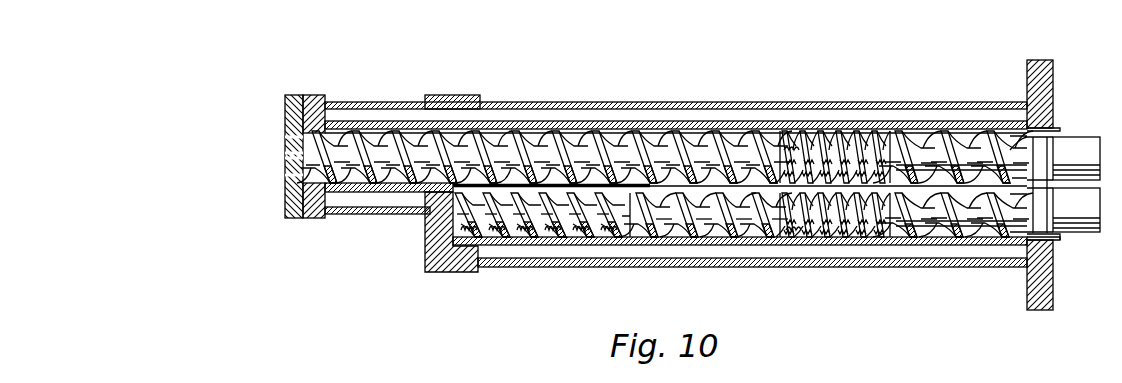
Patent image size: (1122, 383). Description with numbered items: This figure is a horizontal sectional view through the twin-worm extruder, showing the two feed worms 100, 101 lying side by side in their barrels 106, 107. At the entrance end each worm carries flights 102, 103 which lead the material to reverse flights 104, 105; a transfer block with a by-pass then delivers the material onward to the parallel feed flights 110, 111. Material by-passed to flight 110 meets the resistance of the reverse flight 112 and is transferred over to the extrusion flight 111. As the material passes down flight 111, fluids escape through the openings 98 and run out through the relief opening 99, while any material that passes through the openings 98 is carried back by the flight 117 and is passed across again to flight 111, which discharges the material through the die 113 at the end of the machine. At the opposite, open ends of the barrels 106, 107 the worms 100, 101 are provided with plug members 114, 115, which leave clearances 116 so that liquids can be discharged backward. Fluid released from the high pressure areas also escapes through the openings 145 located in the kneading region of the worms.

The openings 98 is at (608, 188).
The relief opening 99 is at (427, 228).
The feed worm 100 is at (1005, 225).
The feed worm 101 is at (973, 150).
The flight 102 is at (918, 220).
The flight 103 is at (927, 150).
The reverse flight 104 is at (855, 228).
The reverse flight 105 is at (853, 150).
The barrel 106 is at (915, 215).
The barrel 107 is at (888, 150).
The feed flight 110 is at (698, 215).
The extrusion flight 111 is at (690, 152).
The reverse flight 112 is at (655, 215).
The die 113 is at (283, 150).
The plug member 114 is at (1076, 210).
The plug member 115 is at (1076, 158).
The clearance 116 is at (1060, 238).
The flight 117 is at (512, 228).
The openings 145 is at (805, 148).